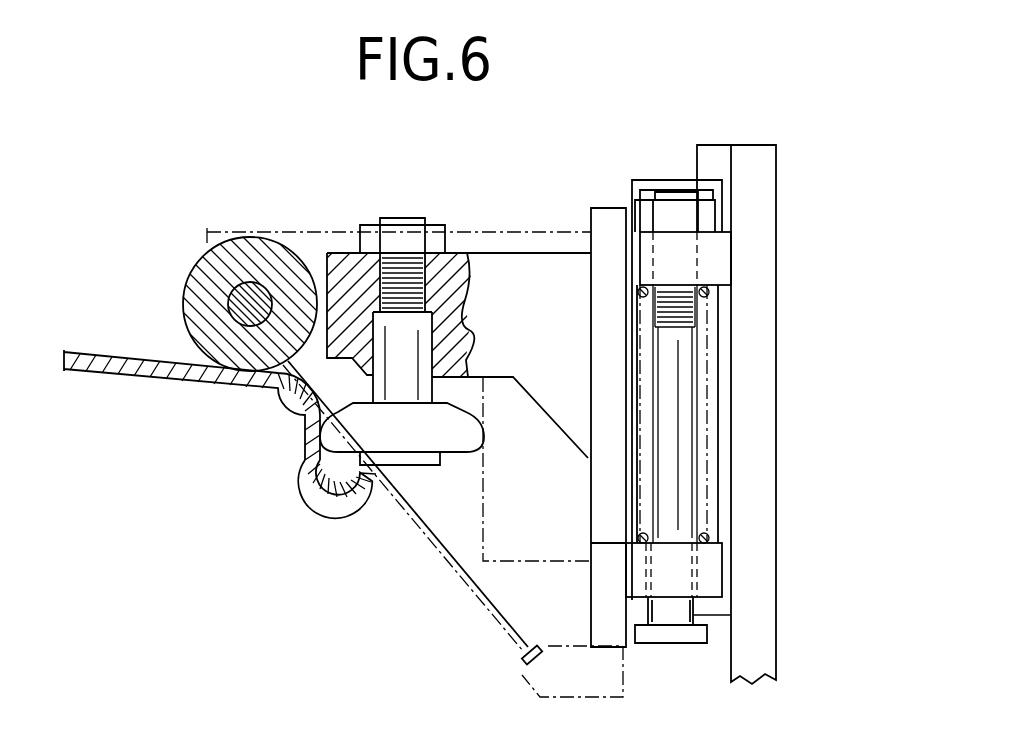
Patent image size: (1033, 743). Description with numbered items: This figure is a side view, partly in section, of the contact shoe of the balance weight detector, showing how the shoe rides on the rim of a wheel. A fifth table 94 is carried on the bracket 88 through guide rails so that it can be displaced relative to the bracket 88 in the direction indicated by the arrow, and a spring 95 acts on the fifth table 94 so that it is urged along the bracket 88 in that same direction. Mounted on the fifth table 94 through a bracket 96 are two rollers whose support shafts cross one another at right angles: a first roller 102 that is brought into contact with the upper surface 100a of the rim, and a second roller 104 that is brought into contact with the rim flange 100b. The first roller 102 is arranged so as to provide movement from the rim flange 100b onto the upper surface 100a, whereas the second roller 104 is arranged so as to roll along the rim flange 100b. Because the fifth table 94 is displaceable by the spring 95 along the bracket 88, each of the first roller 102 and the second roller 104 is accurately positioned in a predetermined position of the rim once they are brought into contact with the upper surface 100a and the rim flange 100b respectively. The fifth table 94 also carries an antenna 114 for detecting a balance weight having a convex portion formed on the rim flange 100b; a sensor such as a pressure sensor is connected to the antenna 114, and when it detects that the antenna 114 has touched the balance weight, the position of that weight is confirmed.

The bracket 88 is at (758, 235).
The fifth table 94 is at (612, 222).
The spring 95 is at (708, 294).
The bracket 96 is at (522, 268).
The upper surface 100a is at (232, 376).
The rim flange 100b is at (310, 468).
The first roller 102 is at (207, 302).
The second roller 104 is at (405, 433).
The antenna 114 is at (468, 583).